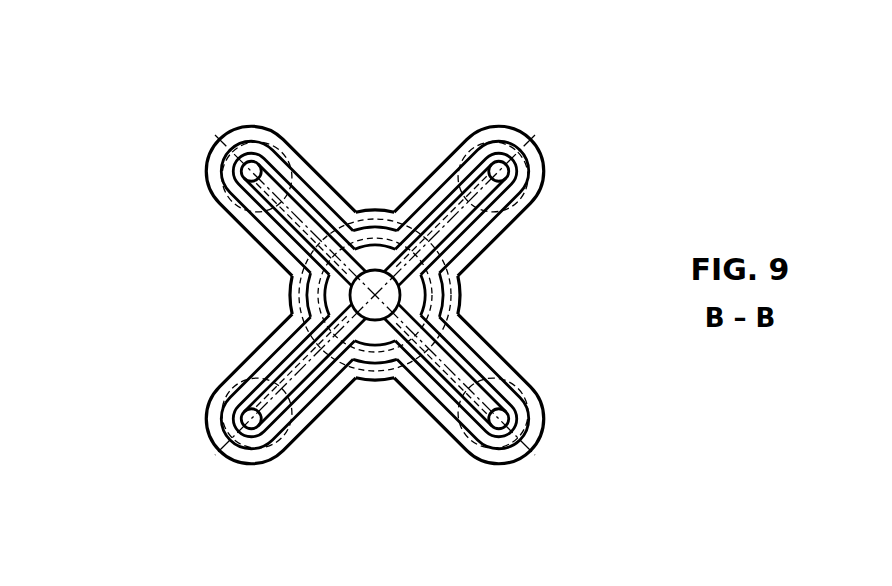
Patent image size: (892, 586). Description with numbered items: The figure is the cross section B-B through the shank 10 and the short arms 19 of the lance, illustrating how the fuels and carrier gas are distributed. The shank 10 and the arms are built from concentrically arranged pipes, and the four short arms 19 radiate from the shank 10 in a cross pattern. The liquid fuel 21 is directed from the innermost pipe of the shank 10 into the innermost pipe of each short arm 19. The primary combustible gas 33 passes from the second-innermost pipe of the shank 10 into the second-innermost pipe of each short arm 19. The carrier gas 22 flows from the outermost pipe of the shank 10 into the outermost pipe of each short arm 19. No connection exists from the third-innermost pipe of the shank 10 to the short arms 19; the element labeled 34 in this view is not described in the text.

The shank 10 is at (288, 298).
The short arm 19 is at (248, 236).
The liquid fuel 21 is at (472, 190).
The carrier gas 22 is at (422, 198).
The primary combustible gas 33 is at (447, 197).
The intermediate step 34 is at (377, 355).